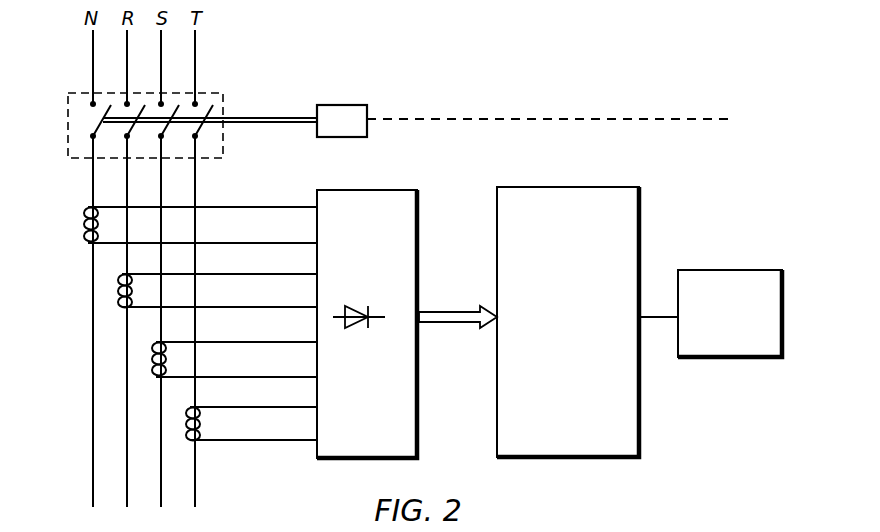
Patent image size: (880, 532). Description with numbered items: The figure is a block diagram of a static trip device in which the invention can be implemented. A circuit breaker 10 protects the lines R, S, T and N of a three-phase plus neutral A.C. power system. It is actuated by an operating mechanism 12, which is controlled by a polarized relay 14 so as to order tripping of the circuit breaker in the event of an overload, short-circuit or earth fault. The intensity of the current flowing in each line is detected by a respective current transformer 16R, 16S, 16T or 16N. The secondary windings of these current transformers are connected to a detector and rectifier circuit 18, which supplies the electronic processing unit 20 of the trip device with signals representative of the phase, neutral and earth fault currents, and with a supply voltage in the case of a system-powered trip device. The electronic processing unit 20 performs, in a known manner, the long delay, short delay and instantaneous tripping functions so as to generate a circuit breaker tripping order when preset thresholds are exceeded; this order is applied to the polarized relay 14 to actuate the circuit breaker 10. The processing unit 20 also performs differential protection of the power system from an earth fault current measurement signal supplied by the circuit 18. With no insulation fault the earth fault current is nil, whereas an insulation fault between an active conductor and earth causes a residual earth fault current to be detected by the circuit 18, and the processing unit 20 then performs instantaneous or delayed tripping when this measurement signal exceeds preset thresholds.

The circuit breaker 10 is at (232, 103).
The operating mechanism 12 is at (348, 105).
The polarized relay 14 is at (744, 264).
The current transformer 16N is at (84, 228).
The current transformer 16R is at (118, 297).
The current transformer 16S is at (152, 359).
The current transformer 16T is at (188, 442).
The detector and rectifier circuit 18 is at (420, 416).
The electronic processing unit 20 is at (640, 432).